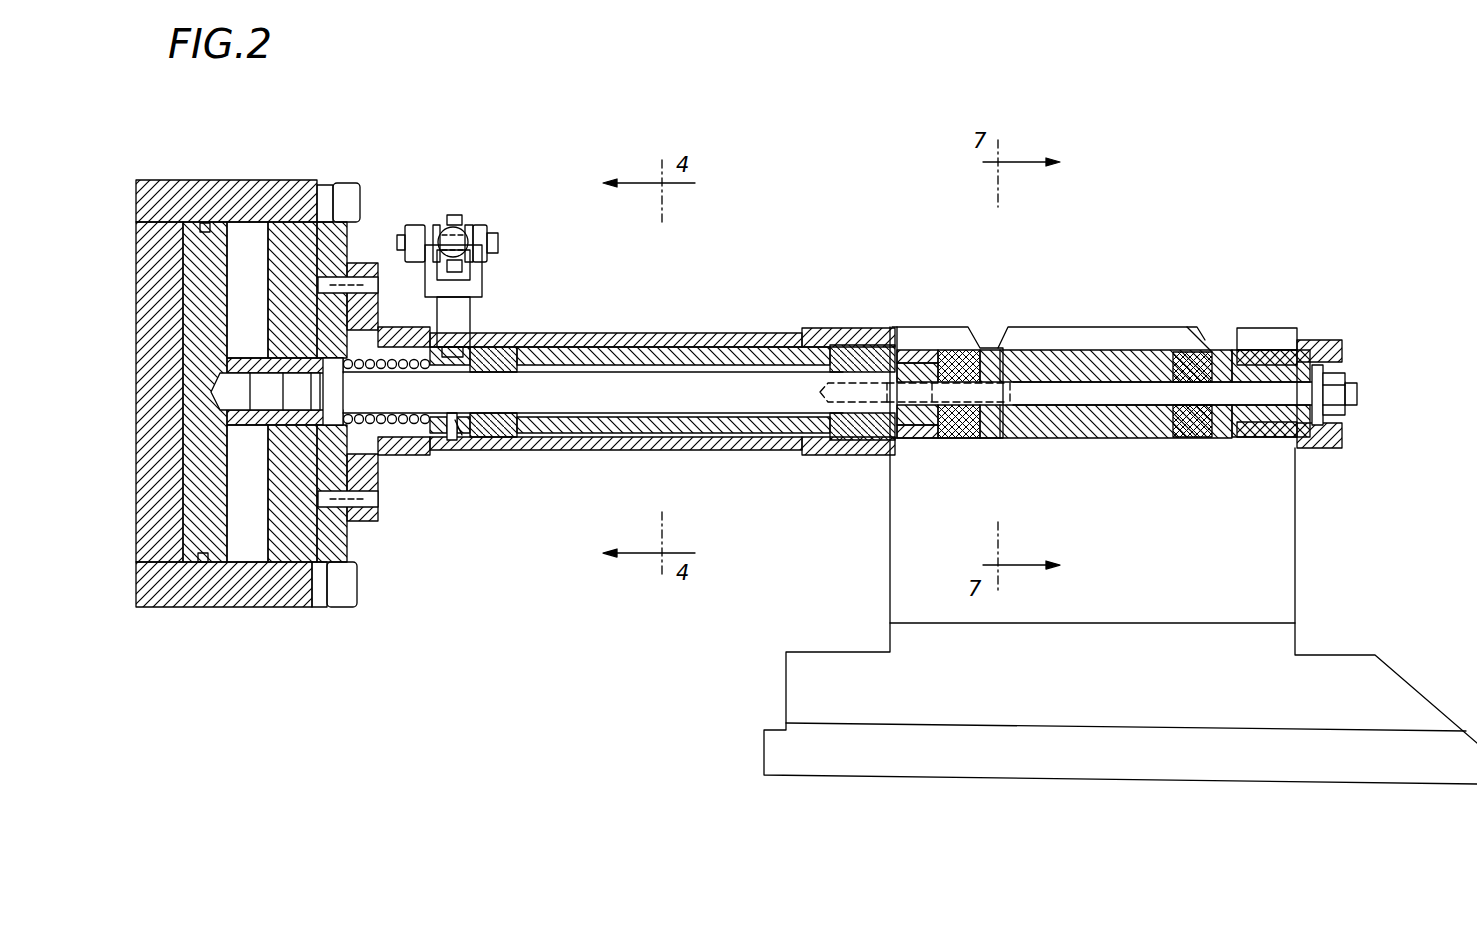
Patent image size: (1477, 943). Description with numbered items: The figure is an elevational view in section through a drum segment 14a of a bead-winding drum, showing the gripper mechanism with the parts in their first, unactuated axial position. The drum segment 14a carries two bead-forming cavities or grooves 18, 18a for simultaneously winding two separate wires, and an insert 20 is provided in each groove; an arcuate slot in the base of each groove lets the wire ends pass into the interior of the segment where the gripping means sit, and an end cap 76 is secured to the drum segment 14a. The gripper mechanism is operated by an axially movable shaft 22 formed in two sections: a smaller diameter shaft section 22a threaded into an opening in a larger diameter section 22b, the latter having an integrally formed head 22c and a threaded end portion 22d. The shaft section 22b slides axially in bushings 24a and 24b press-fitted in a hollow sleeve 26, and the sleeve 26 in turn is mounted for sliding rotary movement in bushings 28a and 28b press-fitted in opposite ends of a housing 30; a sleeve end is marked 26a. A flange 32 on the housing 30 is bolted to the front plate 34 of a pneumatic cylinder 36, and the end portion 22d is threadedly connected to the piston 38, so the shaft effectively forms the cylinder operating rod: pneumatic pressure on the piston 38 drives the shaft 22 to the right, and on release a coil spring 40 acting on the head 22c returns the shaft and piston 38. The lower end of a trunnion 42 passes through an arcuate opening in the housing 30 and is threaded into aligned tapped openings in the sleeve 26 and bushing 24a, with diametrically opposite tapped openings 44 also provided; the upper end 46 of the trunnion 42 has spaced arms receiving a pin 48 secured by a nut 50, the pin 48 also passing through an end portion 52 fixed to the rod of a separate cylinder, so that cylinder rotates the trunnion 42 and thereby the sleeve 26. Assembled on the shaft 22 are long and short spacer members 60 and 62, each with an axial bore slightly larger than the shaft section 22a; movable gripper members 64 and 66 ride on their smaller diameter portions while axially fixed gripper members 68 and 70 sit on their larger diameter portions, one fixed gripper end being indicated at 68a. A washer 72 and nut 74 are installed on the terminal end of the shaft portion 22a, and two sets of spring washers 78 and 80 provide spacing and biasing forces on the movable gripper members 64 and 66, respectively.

The drum segment 14a is at (890, 535).
The bead-forming groove 18 is at (985, 327).
The bead-forming groove 18a is at (1223, 330).
The insert 20 is at (1002, 348).
The axially movable shaft 22 is at (730, 420).
The smaller diameter shaft section 22a is at (1045, 350).
The larger diameter shaft section 22b is at (556, 400).
The head 22c is at (340, 372).
The threaded end portion 22d is at (262, 398).
The bushing 24a is at (505, 437).
The bushing 24b is at (850, 455).
The hollow sleeve 26 is at (625, 333).
The tube end 26a is at (1000, 440).
The bushing 28a is at (385, 455).
The bushing 28b is at (855, 328).
The housing 30 is at (725, 333).
The flange 32 is at (352, 263).
The front plate 34 is at (352, 548).
The pneumatic cylinder 36 is at (275, 180).
The piston 38 is at (205, 268).
The coil spring 40 is at (460, 410).
The trunnion 42 is at (470, 305).
The tapped openings 44 is at (454, 448).
The upper end of trunnion 46 is at (482, 265).
The pin 48 is at (490, 228).
The nut 50 is at (412, 228).
The end portion 52 is at (448, 222).
The long spacer member 60 is at (1100, 330).
The short spacer member 62 is at (1270, 450).
The movable gripper member 64 is at (968, 438).
The movable gripper member 66 is at (1200, 440).
The axially fixed gripper member 68 is at (1072, 440).
The sleeve end 68a is at (1243, 345).
The axially fixed gripper member 70 is at (1280, 330).
The washer 72 is at (1350, 386).
The nut 74 is at (1340, 418).
The end cap 76 is at (1342, 345).
The spring washers 78 is at (935, 438).
The spring washers 80 is at (1185, 350).